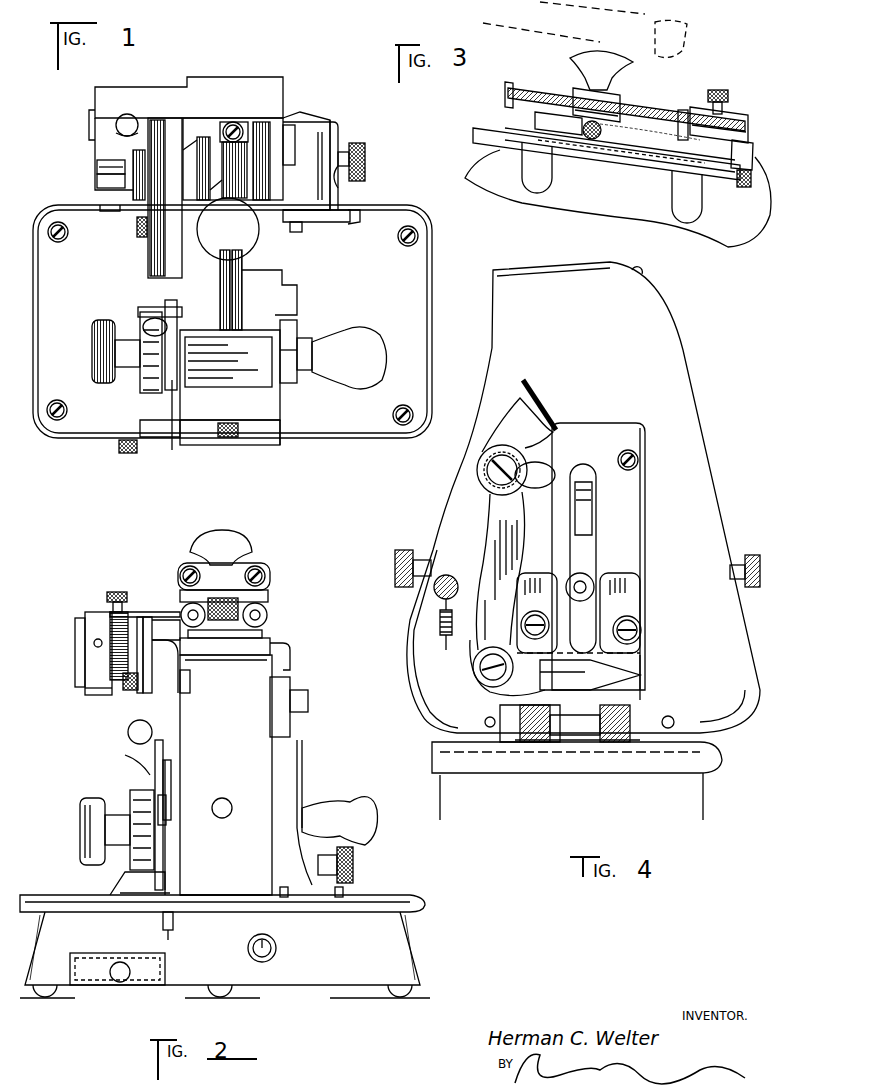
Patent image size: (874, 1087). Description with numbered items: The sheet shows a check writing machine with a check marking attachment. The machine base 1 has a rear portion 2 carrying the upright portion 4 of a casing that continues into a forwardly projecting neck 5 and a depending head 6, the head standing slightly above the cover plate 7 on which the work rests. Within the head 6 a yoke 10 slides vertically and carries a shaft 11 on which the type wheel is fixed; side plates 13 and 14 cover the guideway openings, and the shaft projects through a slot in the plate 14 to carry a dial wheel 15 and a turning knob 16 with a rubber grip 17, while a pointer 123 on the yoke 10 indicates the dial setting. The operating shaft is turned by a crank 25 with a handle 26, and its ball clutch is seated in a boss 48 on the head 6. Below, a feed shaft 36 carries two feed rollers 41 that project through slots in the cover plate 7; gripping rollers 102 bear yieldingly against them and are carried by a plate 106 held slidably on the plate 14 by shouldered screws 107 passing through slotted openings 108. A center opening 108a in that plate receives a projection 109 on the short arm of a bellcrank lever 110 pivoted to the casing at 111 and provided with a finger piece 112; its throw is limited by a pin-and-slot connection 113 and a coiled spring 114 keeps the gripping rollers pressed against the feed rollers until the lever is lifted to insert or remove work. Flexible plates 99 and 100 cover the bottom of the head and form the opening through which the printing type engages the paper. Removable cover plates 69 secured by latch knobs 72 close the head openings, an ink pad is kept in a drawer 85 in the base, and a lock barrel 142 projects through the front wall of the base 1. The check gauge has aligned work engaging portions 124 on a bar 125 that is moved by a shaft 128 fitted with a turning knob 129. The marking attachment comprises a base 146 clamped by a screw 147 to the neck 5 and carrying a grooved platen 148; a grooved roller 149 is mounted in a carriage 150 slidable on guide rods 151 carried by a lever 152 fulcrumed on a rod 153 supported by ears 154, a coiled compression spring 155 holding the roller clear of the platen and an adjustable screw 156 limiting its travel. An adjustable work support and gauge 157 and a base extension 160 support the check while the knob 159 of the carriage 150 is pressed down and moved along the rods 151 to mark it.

In FIG. 4, the machine base 1 is at (515, 790).
In FIG. 2, the machine base 1 is at (335, 985).
In FIG. 1, the rear portion 2 is at (340, 135).
In FIG. 1, the upright portion 4 is at (310, 125).
In FIG. 1, the neck 5 is at (280, 182).
In FIG. 3, the neck 5 is at (633, 168).
In FIG. 1, the depending head 6 is at (275, 405).
In FIG. 4, the depending head 6 is at (700, 475).
In FIG. 2, the depending head 6 is at (226, 775).
In FIG. 1, the cover plate 7 is at (430, 345).
In FIG. 4, the cover plate 7 is at (690, 768).
In FIG. 2, the cover plate 7 is at (385, 912).
In FIG. 4, the yoke 10 is at (585, 545).
In FIG. 4, the shaft 11 is at (595, 580).
In FIG. 2, the side plate 13 is at (280, 770).
In FIG. 1, the side plate 14 is at (177, 380).
In FIG. 4, the side plate 14 is at (645, 550).
In FIG. 2, the side plate 14 is at (163, 760).
In FIG. 1, the dial wheel 15 is at (150, 393).
In FIG. 2, the dial wheel 15 is at (135, 790).
In FIG. 1, the turning knob 16 is at (128, 367).
In FIG. 2, the turning knob 16 is at (115, 815).
In FIG. 1, the rubber grip 17 is at (100, 383).
In FIG. 2, the rubber grip 17 is at (80, 820).
In FIG. 1, the crank 25 is at (315, 370).
In FIG. 2, the crank 25 is at (310, 770).
In FIG. 1, the handle 26 is at (355, 378).
In FIG. 2, the handle 26 is at (377, 818).
In FIG. 2, the feed shaft 36 is at (170, 932).
In FIG. 4, the feed rollers 41 is at (620, 745).
In FIG. 2, the feed rollers 41 is at (160, 897).
In FIG. 1, the boss 48 is at (297, 340).
In FIG. 2, the boss 48 is at (290, 695).
In FIG. 1, the cover plates 69 is at (262, 440).
In FIG. 4, the cover plates 69 is at (418, 610).
In FIG. 2, the cover plates 69 is at (225, 835).
In FIG. 1, the knobs 72 is at (226, 437).
In FIG. 4, the knobs 72 is at (412, 550).
In FIG. 2, the knobs 72 is at (228, 802).
In FIG. 2, the drawer 85 is at (108, 983).
In FIG. 4, the flexible plate 99 is at (672, 712).
In FIG. 4, the flexible plate 100 is at (500, 720).
In FIG. 4, the gripping rollers 102 is at (600, 742).
In FIG. 2, the gripping rollers 102 is at (120, 885).
In FIG. 1, the plate 106 is at (173, 445).
In FIG. 4, the plate 106 is at (645, 670).
In FIG. 2, the plate 106 is at (170, 855).
In FIG. 4, the screws 107 is at (642, 630).
In FIG. 4, the slotted openings 108 is at (645, 603).
In FIG. 4, the center opening 108a is at (645, 690).
In FIG. 4, the projection 109 is at (640, 655).
In FIG. 1, the bellcrank lever 110 is at (150, 294).
In FIG. 4, the bellcrank lever 110 is at (505, 530).
In FIG. 2, the bellcrank lever 110 is at (125, 755).
In FIG. 4, the pivot 111 is at (475, 672).
In FIG. 1, the finger piece 112 is at (143, 322).
In FIG. 4, the finger piece 112 is at (558, 395).
In FIG. 2, the finger piece 112 is at (128, 733).
In FIG. 4, the pin-and-slot connection 113 is at (540, 460).
In FIG. 2, the pin-and-slot connection 113 is at (171, 780).
In FIG. 4, the coiled spring 114 is at (440, 628).
In FIG. 1, the pointer 123 is at (228, 362).
In FIG. 4, the pointer 123 is at (593, 492).
In FIG. 2, the pointer 123 is at (166, 805).
In FIG. 1, the work engaging portions 124 is at (350, 225).
In FIG. 2, the work engaging portions 124 is at (288, 897).
In FIG. 1, the bar 125 is at (360, 215).
In FIG. 2, the bar 125 is at (335, 890).
In FIG. 1, the shaft 128 is at (345, 185).
In FIG. 2, the shaft 128 is at (318, 860).
In FIG. 1, the turning knob 129 is at (365, 153).
In FIG. 2, the turning knob 129 is at (355, 865).
In FIG. 2, the barrel 142 is at (276, 952).
In FIG. 1, the base 146 is at (270, 280).
In FIG. 3, the base 146 is at (652, 182).
In FIG. 2, the base 146 is at (292, 645).
In FIG. 1, the screw 147 is at (137, 235).
In FIG. 2, the screw 147 is at (130, 690).
In FIG. 1, the platen 148 is at (270, 298).
In FIG. 3, the platen 148 is at (612, 152).
In FIG. 2, the platen 148 is at (223, 655).
In FIG. 3, the grooved roller 149 is at (568, 125).
In FIG. 2, the grooved roller 149 is at (270, 572).
In FIG. 1, the carriage 150 is at (300, 232).
In FIG. 3, the carriage 150 is at (622, 100).
In FIG. 2, the carriage 150 is at (268, 595).
In FIG. 1, the rods 151 is at (210, 130).
In FIG. 3, the rods 151 is at (550, 95).
In FIG. 2, the rods 151 is at (268, 612).
In FIG. 1, the lever 152 is at (165, 80).
In FIG. 3, the lever 152 is at (748, 112).
In FIG. 2, the lever 152 is at (152, 612).
In FIG. 1, the rod 153 is at (97, 183).
In FIG. 3, the rod 153 is at (760, 205).
In FIG. 2, the rod 153 is at (93, 650).
In FIG. 1, the ears 154 is at (97, 166).
In FIG. 3, the ears 154 is at (756, 195).
In FIG. 2, the ears 154 is at (110, 660).
In FIG. 3, the coiled compression spring 155 is at (690, 108).
In FIG. 2, the coiled compression spring 155 is at (90, 678).
In FIG. 1, the screw 156 is at (115, 125).
In FIG. 3, the screw 156 is at (725, 92).
In FIG. 2, the screw 156 is at (107, 596).
In FIG. 1, the work support and gauge 157 is at (148, 250).
In FIG. 3, the work support and gauge 157 is at (530, 106).
In FIG. 2, the work support and gauge 157 is at (148, 620).
In FIG. 1, the knob 159 is at (228, 229).
In FIG. 3, the knob 159 is at (570, 60).
In FIG. 2, the knob 159 is at (190, 545).
In FIG. 1, the base extension 160 is at (250, 375).
In FIG. 3, the base extension 160 is at (495, 143).
In FIG. 2, the base extension 160 is at (243, 640).